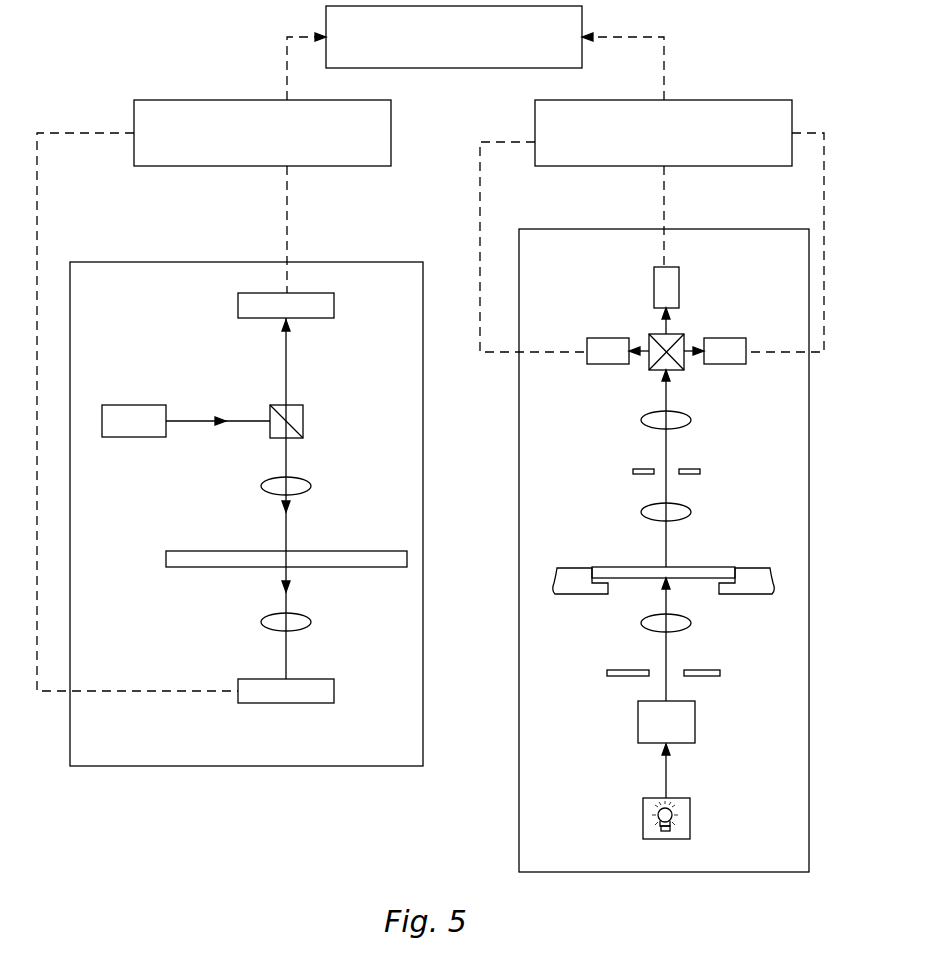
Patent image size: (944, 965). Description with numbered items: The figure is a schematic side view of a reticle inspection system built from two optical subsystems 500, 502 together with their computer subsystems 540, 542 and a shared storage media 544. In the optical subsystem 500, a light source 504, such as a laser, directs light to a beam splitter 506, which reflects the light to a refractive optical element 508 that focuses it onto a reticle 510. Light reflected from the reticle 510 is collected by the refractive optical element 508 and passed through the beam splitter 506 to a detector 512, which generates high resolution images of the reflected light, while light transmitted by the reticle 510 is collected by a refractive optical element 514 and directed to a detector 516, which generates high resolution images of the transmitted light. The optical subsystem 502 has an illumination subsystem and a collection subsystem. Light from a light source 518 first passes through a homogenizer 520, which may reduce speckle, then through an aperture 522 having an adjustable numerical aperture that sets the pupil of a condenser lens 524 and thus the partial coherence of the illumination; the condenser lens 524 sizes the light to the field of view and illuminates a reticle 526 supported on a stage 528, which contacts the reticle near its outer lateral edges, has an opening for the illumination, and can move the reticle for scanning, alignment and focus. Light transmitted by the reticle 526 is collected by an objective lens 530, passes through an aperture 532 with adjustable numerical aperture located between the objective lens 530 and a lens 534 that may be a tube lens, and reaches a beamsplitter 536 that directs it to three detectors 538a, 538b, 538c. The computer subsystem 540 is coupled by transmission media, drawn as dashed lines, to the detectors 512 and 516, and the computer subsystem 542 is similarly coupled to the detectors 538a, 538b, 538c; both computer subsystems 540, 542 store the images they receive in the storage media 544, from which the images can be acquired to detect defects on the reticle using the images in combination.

The optical subsystem 500 is at (246, 500).
The optical subsystem 502 is at (696, 550).
The light source 504 is at (126, 408).
The beam splitter 506 is at (318, 417).
The refractive optical element 508 is at (316, 475).
The reticle 510 is at (267, 545).
The detector 512 is at (253, 301).
The refractive optical element 514 is at (316, 611).
The detector 516 is at (318, 682).
The light source 518 is at (698, 814).
The homogenizer 520 is at (697, 717).
The aperture 522 is at (695, 662).
The condenser lens 524 is at (698, 615).
The reticle 526 is at (688, 559).
The stage 528 is at (654, 598).
The objective lens 530 is at (698, 500).
The aperture 532 is at (698, 458).
The lens 534 is at (698, 410).
The beamsplitter 536 is at (624, 376).
The detector 538a is at (579, 365).
The detector 538b is at (705, 284).
The detector 538c is at (753, 339).
The computer subsystem 540 is at (280, 154).
The computer subsystem 542 is at (681, 154).
The storage media 544 is at (545, 48).